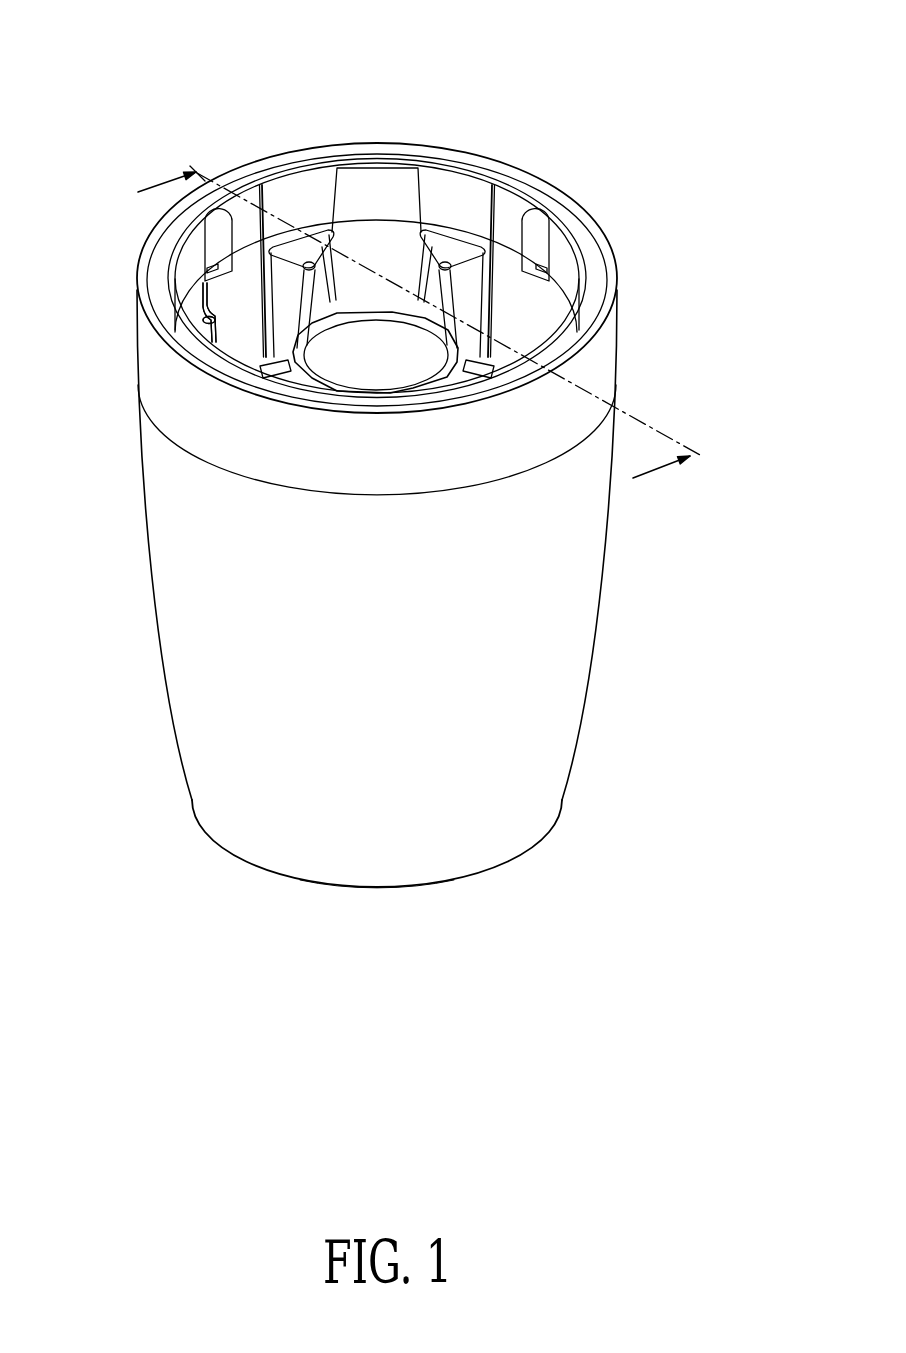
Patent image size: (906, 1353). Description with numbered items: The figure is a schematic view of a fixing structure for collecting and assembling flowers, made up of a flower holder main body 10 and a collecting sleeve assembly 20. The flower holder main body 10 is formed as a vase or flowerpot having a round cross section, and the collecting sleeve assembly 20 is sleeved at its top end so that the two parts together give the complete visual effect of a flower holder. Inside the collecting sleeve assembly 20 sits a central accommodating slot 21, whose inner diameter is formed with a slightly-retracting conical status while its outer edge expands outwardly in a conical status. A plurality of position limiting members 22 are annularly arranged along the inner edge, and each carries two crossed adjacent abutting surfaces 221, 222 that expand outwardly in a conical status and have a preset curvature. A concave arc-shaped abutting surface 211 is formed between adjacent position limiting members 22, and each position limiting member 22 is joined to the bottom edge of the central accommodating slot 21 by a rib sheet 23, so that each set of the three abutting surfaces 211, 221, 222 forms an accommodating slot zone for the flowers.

The flower holder main body 10 is at (622, 606).
The collecting sleeve assembly 20 is at (632, 305).
The central accommodating slot 21 is at (380, 340).
The concave arc-shaped abutting surface 211 is at (368, 312).
The position limiting member 22 is at (515, 197).
The abutting surface 221 is at (467, 287).
The abutting surface 222 is at (432, 270).
The rib sheet 23 is at (200, 328).